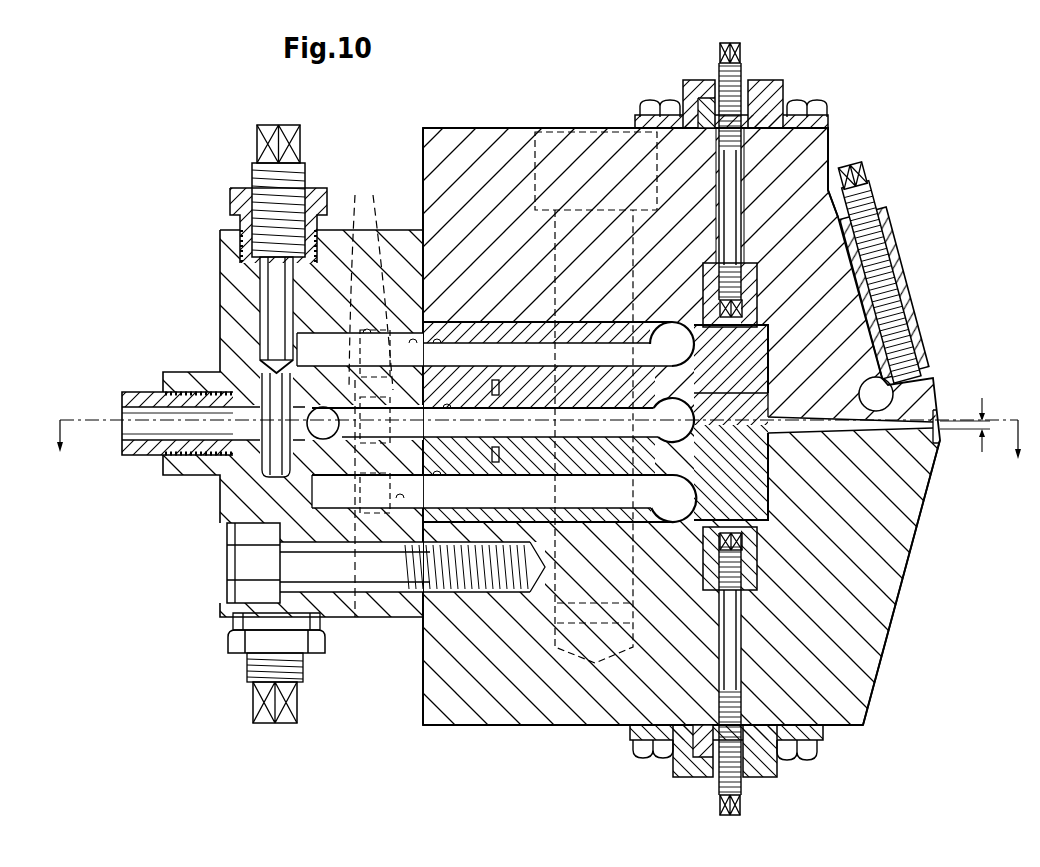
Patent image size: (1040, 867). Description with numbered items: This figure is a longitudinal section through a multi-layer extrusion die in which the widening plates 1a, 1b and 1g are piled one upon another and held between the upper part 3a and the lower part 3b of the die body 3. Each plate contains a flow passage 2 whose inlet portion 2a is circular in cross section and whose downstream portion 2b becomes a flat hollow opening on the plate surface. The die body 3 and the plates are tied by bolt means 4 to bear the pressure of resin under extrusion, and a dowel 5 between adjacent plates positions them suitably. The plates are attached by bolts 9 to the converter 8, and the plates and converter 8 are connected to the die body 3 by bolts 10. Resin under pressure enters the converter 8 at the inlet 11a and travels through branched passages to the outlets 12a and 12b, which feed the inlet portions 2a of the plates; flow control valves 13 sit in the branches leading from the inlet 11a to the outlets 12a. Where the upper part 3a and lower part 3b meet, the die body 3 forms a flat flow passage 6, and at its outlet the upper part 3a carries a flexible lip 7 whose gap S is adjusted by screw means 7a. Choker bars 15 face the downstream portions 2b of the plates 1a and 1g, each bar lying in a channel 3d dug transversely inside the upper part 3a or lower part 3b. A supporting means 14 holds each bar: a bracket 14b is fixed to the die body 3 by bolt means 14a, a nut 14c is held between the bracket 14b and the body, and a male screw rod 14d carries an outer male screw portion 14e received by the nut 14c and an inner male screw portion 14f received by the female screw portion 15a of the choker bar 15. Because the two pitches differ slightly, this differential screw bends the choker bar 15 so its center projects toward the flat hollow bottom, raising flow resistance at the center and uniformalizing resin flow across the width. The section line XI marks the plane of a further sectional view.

The widening plate 1a is at (842, 344).
The widening plate 1b is at (846, 371).
The widening plate 1g is at (842, 499).
The flow passage 2 is at (545, 368).
The inlet portion 2a is at (536, 205).
The downstream portion 2b is at (704, 398).
The die body 3 is at (857, 164).
The upper part 3a is at (849, 293).
The lower part 3b is at (870, 593).
The channel 3d is at (872, 414).
The bolt means 4 is at (582, 367).
The dowel 5 is at (498, 400).
The flat flow passage 6 is at (929, 582).
The flexible lip 7 is at (882, 402).
The screw means 7a is at (875, 299).
The converter 8 is at (293, 395).
The bolts 9 is at (371, 281).
The bolts 10 is at (353, 563).
The inlet 11a is at (211, 457).
The outlet 12a is at (400, 372).
The outlet 12b is at (385, 529).
The flow control valve 13 is at (293, 428).
The supporting means 14 is at (733, 429).
The bolt means 14a is at (837, 95).
The bracket 14b is at (694, 81).
The nut 14c is at (657, 84).
The male screw rod 14d is at (676, 195).
The outer male screw portion 14e is at (764, 175).
The inner male screw portion 14f is at (648, 155).
The choker bar 15 is at (862, 417).
The female screw portion 15a is at (910, 207).
The gap S is at (970, 419).
The section line XI is at (540, 455).